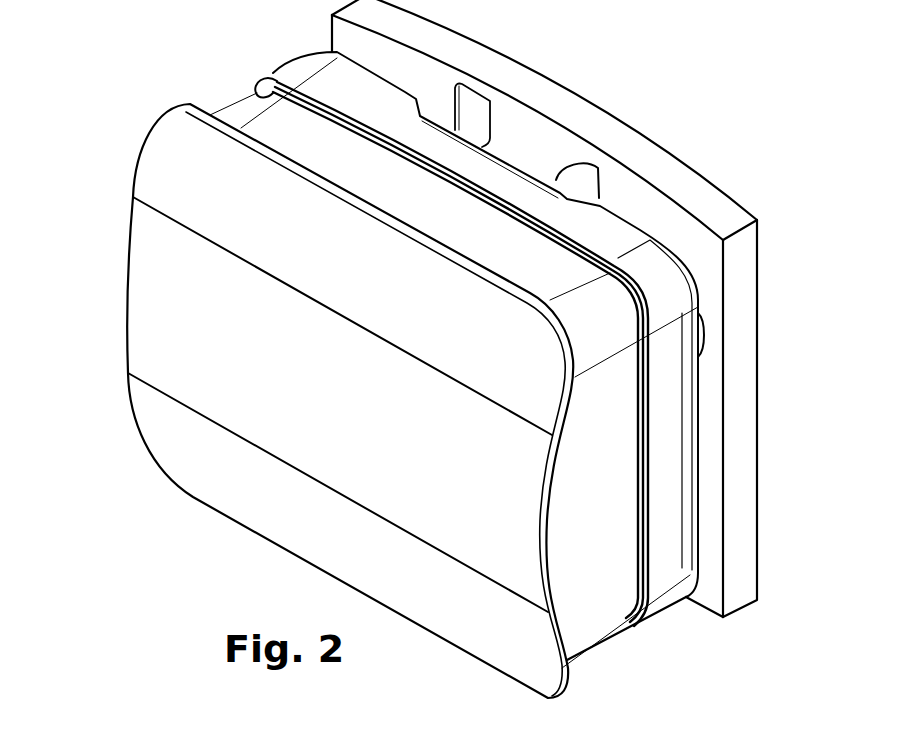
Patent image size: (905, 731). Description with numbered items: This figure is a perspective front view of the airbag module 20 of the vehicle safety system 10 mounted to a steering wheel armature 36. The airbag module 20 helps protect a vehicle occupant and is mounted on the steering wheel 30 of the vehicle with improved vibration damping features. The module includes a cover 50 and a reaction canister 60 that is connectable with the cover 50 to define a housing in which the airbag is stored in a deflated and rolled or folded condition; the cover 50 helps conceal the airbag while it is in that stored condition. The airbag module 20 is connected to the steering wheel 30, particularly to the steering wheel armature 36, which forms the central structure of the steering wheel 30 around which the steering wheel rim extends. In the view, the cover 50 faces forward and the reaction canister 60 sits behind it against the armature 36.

The vehicle safety system 10 is at (123, 88).
The airbag module 20 is at (110, 145).
The steering wheel 30 is at (737, 275).
The steering wheel armature 36 is at (647, 163).
The cover 50 is at (157, 302).
The reaction canister 60 is at (673, 429).